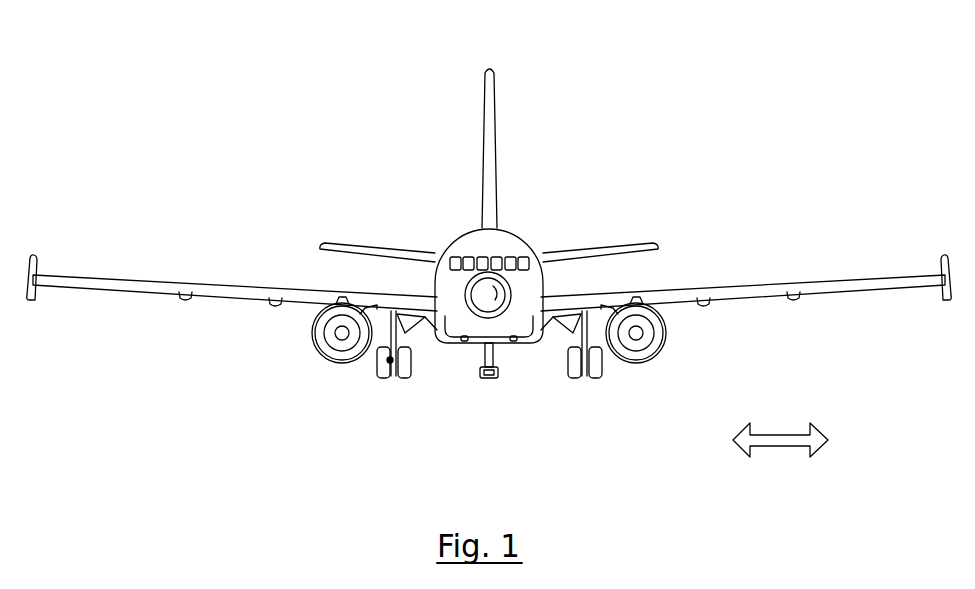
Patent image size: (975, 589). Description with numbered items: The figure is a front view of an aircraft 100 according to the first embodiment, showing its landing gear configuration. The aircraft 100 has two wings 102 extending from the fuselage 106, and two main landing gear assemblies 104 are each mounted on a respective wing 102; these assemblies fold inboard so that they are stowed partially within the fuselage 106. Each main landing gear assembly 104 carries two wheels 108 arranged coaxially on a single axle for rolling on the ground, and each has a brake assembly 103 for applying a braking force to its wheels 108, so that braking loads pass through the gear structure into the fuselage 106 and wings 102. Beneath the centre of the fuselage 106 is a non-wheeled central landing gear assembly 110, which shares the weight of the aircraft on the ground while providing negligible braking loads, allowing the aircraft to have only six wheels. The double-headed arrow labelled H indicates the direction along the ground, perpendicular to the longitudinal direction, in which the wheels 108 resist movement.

The aircraft 100 is at (489, 237).
The wing 102 is at (730, 292).
The brake assembly 103 is at (390, 360).
The main landing gear assembly 104 is at (421, 334).
The fuselage 106 is at (525, 280).
The wheel 108 is at (382, 377).
The central landing gear assembly 110 is at (483, 378).
The direction H is at (763, 450).